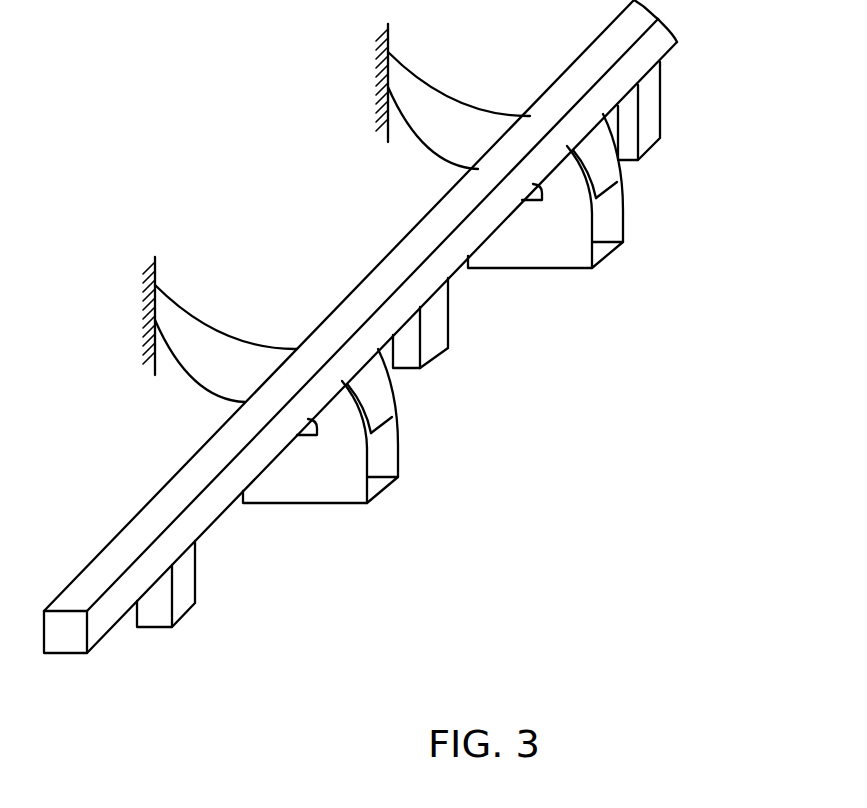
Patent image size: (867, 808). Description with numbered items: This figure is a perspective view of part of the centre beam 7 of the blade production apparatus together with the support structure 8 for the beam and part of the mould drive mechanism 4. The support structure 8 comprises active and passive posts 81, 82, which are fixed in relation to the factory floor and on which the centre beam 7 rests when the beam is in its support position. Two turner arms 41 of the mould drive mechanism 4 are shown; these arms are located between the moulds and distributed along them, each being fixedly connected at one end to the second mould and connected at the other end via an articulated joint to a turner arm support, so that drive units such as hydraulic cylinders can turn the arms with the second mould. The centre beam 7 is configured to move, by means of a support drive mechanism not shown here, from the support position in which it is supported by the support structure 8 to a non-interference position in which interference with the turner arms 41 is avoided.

The centre beam 7 is at (660, 40).
The support structure 8 is at (425, 345).
The active post 81 is at (182, 587).
The passive post 82 is at (655, 103).
The mould drive mechanism 4 is at (343, 490).
The turner arm 41 is at (230, 350).